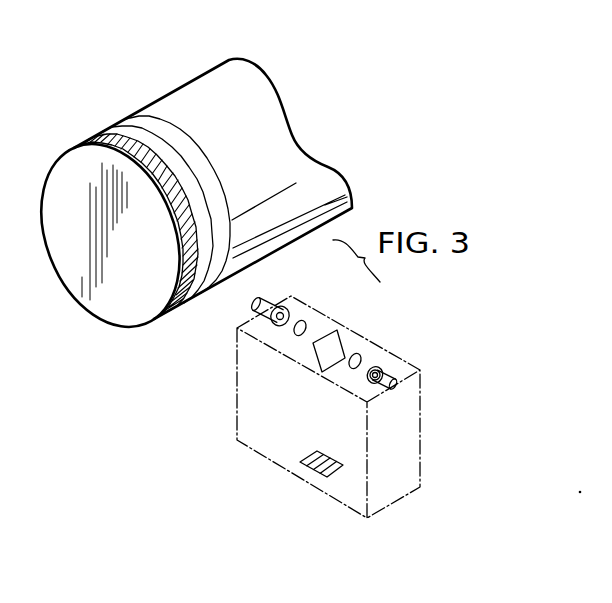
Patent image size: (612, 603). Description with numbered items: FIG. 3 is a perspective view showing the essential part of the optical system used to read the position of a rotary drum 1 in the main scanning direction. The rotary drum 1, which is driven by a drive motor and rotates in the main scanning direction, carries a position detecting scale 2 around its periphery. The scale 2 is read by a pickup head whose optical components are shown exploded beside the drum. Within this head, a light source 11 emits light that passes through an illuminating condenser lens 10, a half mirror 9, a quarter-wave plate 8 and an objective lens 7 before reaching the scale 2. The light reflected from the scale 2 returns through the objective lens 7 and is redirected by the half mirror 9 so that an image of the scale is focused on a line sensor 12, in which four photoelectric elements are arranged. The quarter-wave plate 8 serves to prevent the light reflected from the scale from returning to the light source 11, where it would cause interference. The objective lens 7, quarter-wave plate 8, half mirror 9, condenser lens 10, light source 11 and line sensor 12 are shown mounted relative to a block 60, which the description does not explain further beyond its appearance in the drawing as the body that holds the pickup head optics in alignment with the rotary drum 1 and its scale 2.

The rotary drum 1 is at (180, 90).
The position detecting scale 2 is at (93, 143).
The objective lens 7 is at (272, 300).
The 1/4 lambda plate 8 is at (305, 325).
The half mirror 9 is at (342, 345).
The illuminating condenser lens 10 is at (364, 357).
The light source 11 is at (389, 387).
The line sensor 12 is at (304, 462).
The mounting block 60 is at (440, 364).